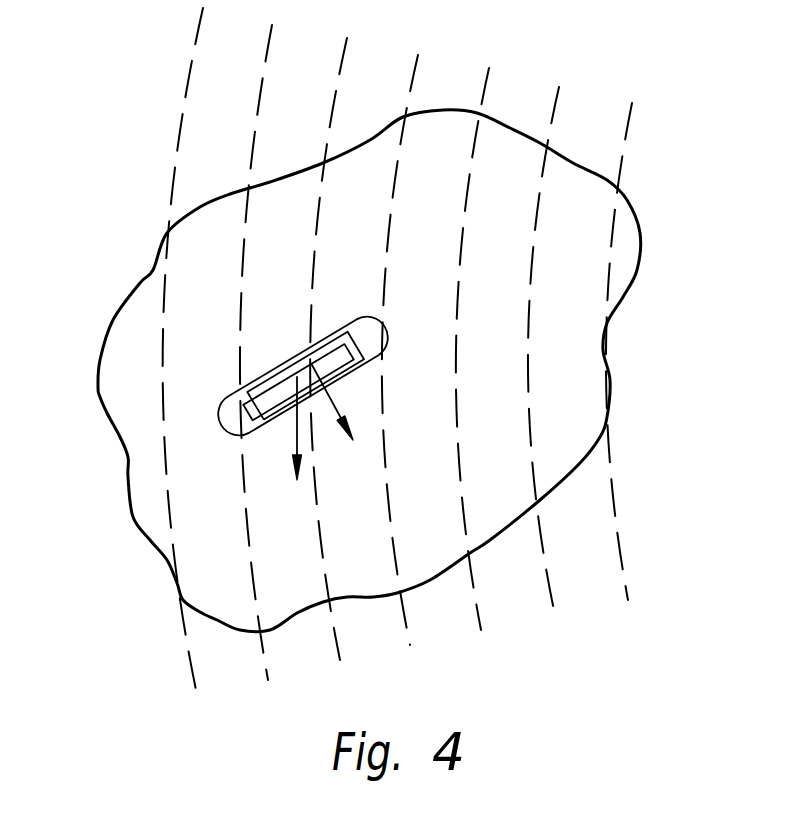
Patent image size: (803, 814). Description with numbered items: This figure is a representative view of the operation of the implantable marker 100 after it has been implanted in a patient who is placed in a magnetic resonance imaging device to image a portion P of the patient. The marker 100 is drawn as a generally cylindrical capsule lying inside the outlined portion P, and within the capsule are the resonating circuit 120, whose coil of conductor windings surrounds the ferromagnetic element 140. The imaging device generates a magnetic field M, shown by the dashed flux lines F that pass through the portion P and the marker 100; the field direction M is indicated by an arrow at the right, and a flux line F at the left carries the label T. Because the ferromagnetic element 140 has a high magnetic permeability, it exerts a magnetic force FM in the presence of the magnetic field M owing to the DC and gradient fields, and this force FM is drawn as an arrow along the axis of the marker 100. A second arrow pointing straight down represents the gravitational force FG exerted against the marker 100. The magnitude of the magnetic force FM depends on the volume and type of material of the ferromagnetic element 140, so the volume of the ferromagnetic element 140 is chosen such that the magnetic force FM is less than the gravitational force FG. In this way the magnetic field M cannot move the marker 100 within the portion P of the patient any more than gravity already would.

The implantable marker 100 is at (272, 345).
The resonating circuit 120 is at (326, 341).
The ferromagnetic element 140 is at (337, 360).
The tissue T is at (192, 67).
The flux lines F is at (622, 148).
The portion of the patient P is at (98, 388).
The magnetic field M is at (635, 550).
The gravitational force FG is at (294, 446).
The magnetic force FM is at (348, 420).